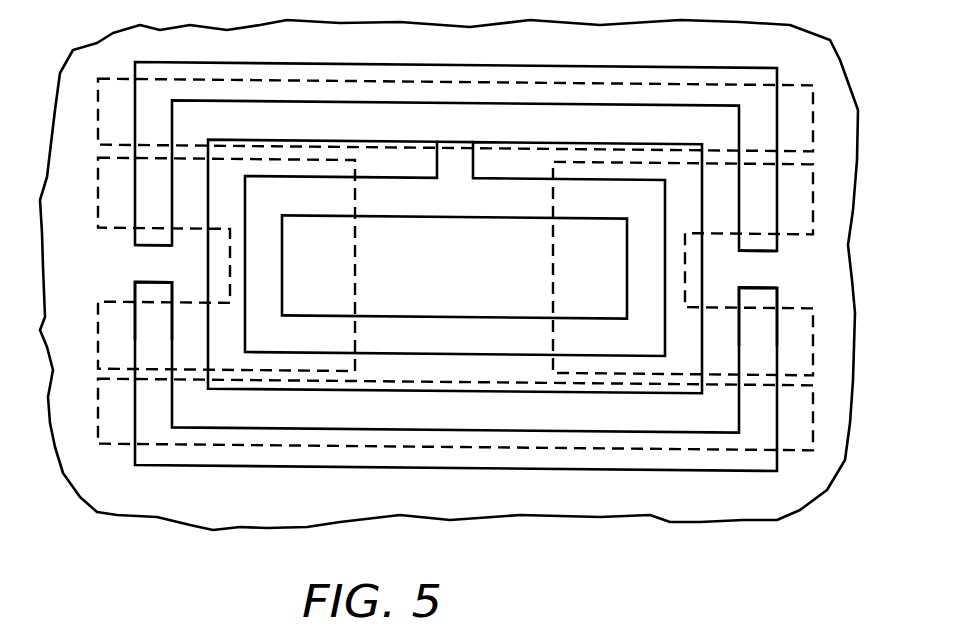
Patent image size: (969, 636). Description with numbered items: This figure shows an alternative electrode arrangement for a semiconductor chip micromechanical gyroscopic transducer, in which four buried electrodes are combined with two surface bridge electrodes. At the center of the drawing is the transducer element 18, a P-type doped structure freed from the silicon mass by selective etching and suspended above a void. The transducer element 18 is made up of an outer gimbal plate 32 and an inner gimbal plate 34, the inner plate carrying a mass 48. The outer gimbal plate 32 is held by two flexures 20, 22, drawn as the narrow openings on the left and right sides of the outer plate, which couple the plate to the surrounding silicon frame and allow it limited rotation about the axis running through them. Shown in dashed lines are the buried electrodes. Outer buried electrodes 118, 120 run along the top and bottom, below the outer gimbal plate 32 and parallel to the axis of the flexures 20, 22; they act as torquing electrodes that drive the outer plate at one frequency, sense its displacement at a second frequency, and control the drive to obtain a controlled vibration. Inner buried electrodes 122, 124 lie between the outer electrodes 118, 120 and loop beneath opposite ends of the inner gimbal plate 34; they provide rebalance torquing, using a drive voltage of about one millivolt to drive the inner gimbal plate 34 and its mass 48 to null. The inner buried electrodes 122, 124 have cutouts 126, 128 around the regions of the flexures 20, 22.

The transducer element 18 is at (543, 139).
The flexure 20 is at (157, 282).
The flexure 22 is at (758, 282).
The outer gimbal plate 32 is at (739, 112).
The inner gimbal plate 34 is at (497, 172).
The mass 48 is at (628, 245).
The outer buried electrode 118 is at (813, 97).
The outer buried electrode 120 is at (812, 419).
The inner buried electrode 122 is at (813, 207).
The inner buried electrode 124 is at (98, 215).
The cutout 126 is at (782, 266).
The cutout 128 is at (122, 262).